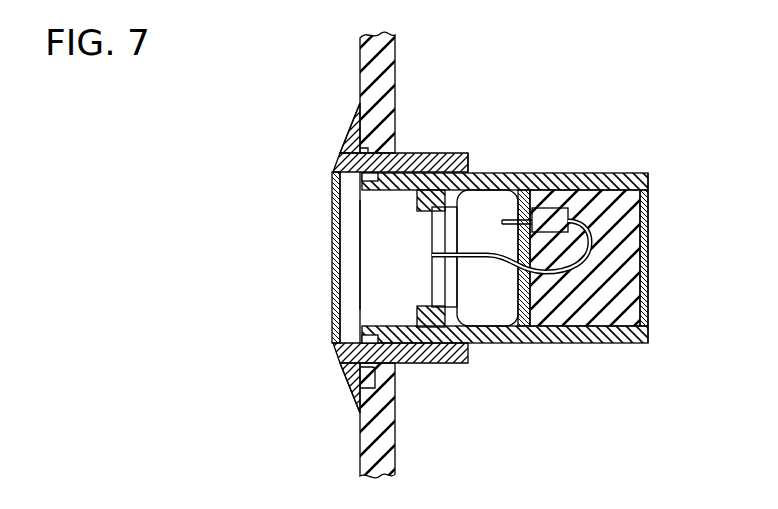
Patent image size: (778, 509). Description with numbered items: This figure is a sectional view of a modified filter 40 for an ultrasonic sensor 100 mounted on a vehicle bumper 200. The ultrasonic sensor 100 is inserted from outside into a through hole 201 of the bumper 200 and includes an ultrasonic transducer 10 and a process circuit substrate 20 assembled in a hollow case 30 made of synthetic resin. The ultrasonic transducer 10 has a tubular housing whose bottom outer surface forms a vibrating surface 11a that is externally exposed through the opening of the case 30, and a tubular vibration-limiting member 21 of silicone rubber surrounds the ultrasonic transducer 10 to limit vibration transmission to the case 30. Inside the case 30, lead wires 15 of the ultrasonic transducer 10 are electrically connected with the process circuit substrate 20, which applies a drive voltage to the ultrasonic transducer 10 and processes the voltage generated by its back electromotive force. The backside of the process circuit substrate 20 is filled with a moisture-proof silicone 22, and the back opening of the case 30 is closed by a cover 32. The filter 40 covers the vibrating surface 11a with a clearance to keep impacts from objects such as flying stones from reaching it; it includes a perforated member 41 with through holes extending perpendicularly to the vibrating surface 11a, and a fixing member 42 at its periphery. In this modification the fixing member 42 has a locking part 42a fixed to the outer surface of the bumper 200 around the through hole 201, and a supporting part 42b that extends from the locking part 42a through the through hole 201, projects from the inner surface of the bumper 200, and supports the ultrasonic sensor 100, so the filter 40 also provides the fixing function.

The ultrasonic sensor 100 is at (624, 112).
The bumper 200 is at (370, 75).
The through hole 201 is at (363, 386).
The ultrasonic transducer 10 is at (376, 281).
The vibrating surface 11a is at (360, 227).
The lead wires 15 is at (603, 222).
The process circuit substrate 20 is at (530, 330).
The vibration-limiting member 21 is at (447, 310).
The moisture-proof silicone 22 is at (615, 260).
The hollow case 30 is at (538, 172).
The cover 32 is at (642, 298).
The filter 40 is at (326, 192).
The perforated member 41 is at (332, 263).
The fixing member 42 is at (340, 158).
The locking part 42a is at (350, 138).
The supporting part 42b is at (452, 153).